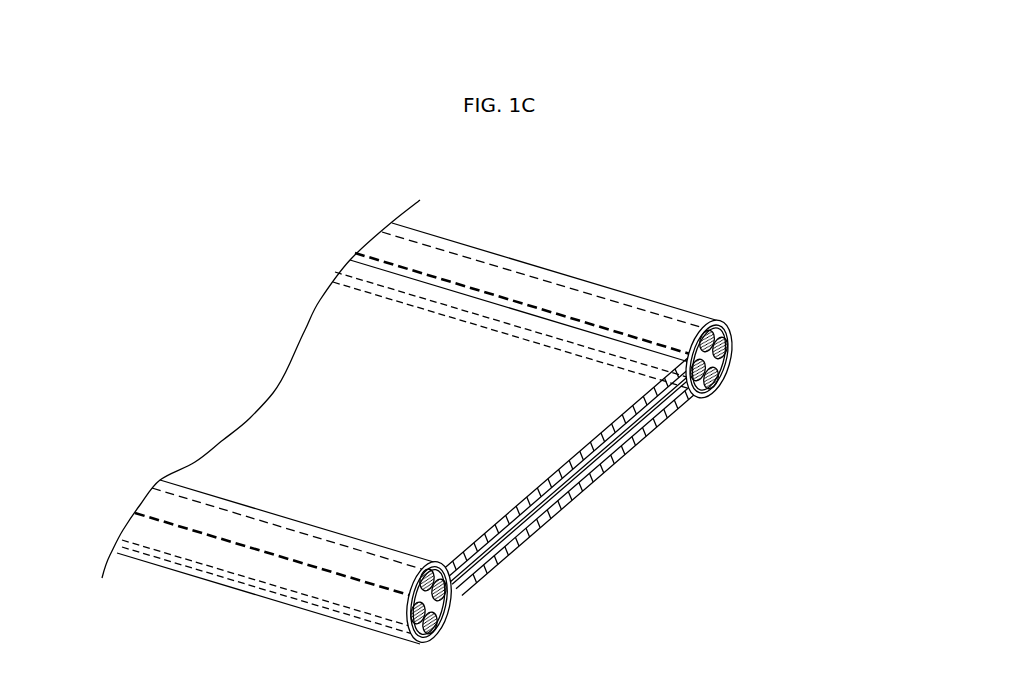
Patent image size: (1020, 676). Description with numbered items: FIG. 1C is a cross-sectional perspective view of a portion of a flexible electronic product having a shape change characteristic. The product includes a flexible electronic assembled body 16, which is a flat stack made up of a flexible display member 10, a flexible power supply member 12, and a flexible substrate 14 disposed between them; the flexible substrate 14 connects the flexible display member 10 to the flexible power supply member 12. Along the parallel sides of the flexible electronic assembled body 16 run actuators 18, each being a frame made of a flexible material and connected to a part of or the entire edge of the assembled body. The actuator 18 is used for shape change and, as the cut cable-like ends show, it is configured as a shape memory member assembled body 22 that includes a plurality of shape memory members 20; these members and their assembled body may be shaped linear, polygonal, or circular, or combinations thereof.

The flexible display member 10 is at (610, 463).
The flexible power supply member 12 is at (570, 523).
The flexible substrate 14 is at (570, 488).
The flexible electronic assembled body 16 is at (607, 473).
The actuator 18 is at (268, 511).
The shape memory member 20 is at (720, 323).
The shape memory member assembled body 22 is at (790, 357).